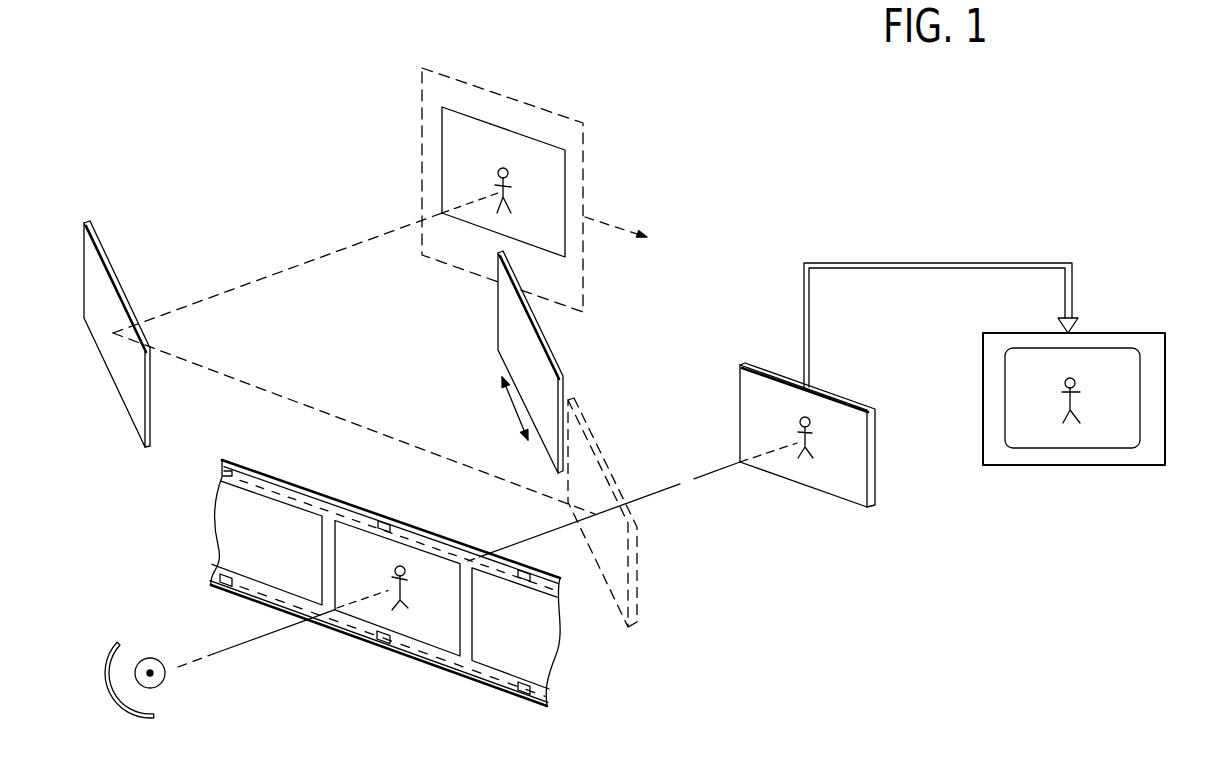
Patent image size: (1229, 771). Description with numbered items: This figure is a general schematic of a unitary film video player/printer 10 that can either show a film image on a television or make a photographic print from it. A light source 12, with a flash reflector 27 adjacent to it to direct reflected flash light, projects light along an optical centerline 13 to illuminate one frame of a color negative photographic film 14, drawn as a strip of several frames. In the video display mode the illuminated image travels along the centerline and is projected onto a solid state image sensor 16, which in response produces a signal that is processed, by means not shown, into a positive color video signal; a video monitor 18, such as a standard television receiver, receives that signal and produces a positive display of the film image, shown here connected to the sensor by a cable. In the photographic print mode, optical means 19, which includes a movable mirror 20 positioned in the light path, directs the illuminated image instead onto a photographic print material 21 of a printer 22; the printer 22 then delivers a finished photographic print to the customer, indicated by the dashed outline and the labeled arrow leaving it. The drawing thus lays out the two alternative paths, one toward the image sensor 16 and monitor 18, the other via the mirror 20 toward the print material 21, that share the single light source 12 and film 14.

The unitary film video player/printer 10 is at (350, 672).
The light source 12 is at (157, 657).
The optical centerline 13 is at (236, 649).
The color negative photographic film 14 is at (558, 668).
The solid state image sensor 16 is at (820, 490).
The video monitor 18 is at (1165, 390).
The optical means 19 is at (197, 448).
The movable mirror 20 is at (498, 315).
The photographic print material 21 is at (447, 157).
The printer 22 is at (532, 106).
The flash reflector 27 is at (115, 656).